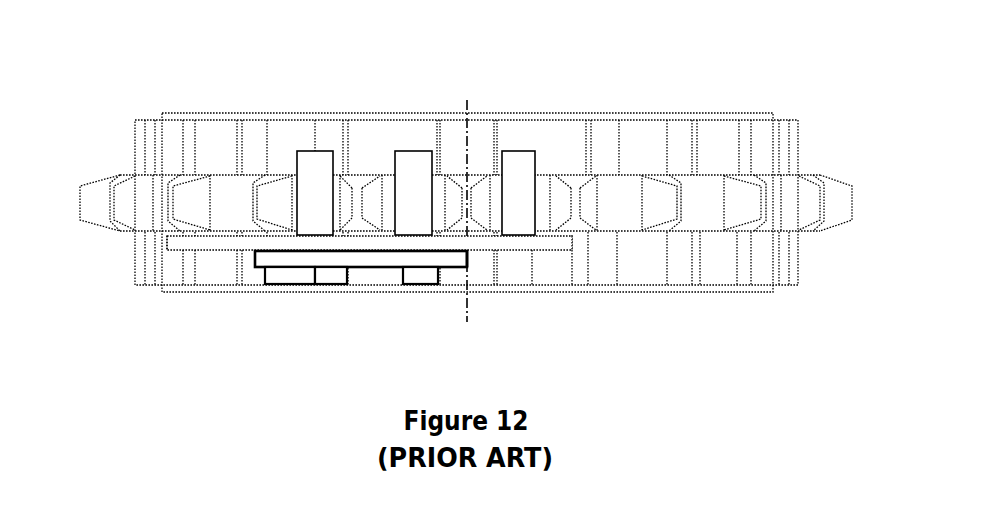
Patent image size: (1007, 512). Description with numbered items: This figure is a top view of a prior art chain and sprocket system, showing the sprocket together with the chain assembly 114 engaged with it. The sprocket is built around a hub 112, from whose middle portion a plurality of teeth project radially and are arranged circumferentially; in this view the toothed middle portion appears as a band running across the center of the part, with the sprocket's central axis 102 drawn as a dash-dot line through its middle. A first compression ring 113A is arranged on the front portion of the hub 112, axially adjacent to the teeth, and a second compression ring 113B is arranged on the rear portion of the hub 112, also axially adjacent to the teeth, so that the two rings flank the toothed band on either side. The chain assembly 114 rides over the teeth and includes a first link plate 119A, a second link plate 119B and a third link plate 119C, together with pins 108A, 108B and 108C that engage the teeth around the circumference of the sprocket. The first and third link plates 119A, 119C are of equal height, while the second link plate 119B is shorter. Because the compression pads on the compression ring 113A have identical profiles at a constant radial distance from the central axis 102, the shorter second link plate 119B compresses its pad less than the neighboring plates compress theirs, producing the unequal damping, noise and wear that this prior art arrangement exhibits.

The central axis 102 is at (468, 108).
The pin 108A is at (323, 160).
The pin 108B is at (413, 158).
The pin 108C is at (507, 153).
The hub 112 is at (700, 113).
The first compression ring 113A is at (677, 268).
The second compression ring 113B is at (577, 137).
The chain assembly 114 is at (572, 246).
The first link plate 119A is at (185, 241).
The second link plate 119B is at (295, 262).
The third link plate 119C is at (463, 242).